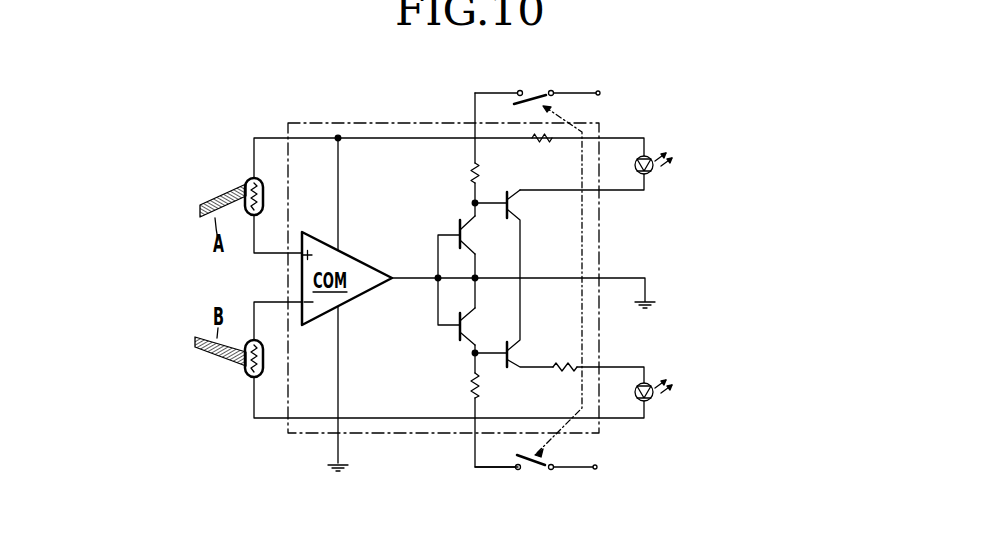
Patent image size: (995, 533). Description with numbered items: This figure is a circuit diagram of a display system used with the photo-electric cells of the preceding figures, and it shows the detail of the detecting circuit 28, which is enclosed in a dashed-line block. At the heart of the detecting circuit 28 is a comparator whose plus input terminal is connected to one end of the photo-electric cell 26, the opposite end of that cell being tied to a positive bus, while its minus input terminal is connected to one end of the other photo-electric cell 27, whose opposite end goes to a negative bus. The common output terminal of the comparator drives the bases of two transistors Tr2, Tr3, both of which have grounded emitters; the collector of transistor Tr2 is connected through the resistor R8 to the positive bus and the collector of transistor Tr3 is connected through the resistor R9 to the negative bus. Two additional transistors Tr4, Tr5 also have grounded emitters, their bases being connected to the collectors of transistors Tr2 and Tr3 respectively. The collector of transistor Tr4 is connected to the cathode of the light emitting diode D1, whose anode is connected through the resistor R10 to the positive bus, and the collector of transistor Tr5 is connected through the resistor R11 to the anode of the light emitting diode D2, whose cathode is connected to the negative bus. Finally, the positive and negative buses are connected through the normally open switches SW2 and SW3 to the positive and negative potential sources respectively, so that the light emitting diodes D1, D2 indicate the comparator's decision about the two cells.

The photo-electric cell 26 is at (247, 184).
The photo-electric cell 27 is at (250, 372).
The detecting circuit 28 is at (364, 125).
The resistor R8 is at (485, 175).
The resistor R9 is at (485, 388).
The resistor R10 is at (544, 153).
The resistor R11 is at (566, 383).
The transistor Tr2 is at (481, 235).
The transistor Tr3 is at (481, 326).
The transistor Tr4 is at (529, 207).
The transistor Tr5 is at (529, 357).
The light emitting diode D1 is at (656, 174).
The light emitting diode D2 is at (656, 400).
The normally open switch SW2 is at (530, 91).
The normally open switch SW3 is at (528, 471).